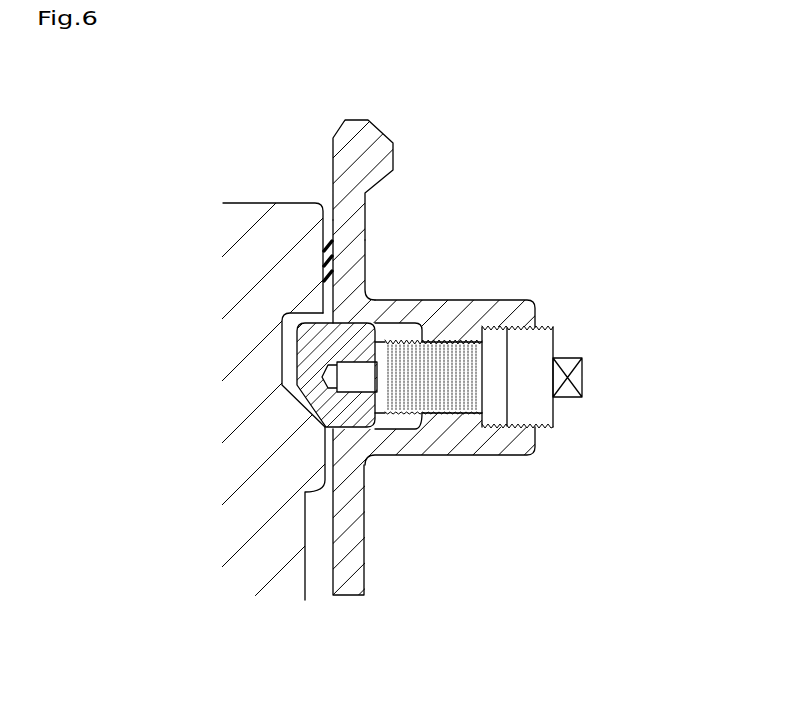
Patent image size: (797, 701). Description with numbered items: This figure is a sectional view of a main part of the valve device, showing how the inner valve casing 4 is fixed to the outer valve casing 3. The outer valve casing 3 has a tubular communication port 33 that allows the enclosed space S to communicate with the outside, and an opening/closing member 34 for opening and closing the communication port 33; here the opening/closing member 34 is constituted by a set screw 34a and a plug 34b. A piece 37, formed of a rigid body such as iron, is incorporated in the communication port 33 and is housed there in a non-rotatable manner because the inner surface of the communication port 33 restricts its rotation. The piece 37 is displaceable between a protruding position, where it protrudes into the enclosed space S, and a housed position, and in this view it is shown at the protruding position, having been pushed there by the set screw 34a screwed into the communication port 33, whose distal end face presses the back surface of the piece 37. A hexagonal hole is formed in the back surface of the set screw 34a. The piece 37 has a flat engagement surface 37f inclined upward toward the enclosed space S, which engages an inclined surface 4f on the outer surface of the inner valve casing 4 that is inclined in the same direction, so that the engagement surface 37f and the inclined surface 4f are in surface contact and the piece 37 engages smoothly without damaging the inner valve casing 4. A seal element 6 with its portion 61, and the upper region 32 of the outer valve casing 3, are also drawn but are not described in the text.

The outer valve casing 3 is at (398, 371).
The inner valve casing 4 is at (325, 355).
The inclined surface 4f is at (291, 399).
The seal member 6 is at (292, 195).
The seal portion 61 is at (323, 247).
The upper portion of plate 32 is at (366, 208).
The communication port 33 is at (387, 299).
The opening/closing member 34 is at (521, 330).
The set screw 34a is at (458, 341).
The plug 34b is at (548, 323).
The piece 37 is at (376, 456).
The engagement surface 37f is at (311, 412).
The enclosed space S is at (318, 562).